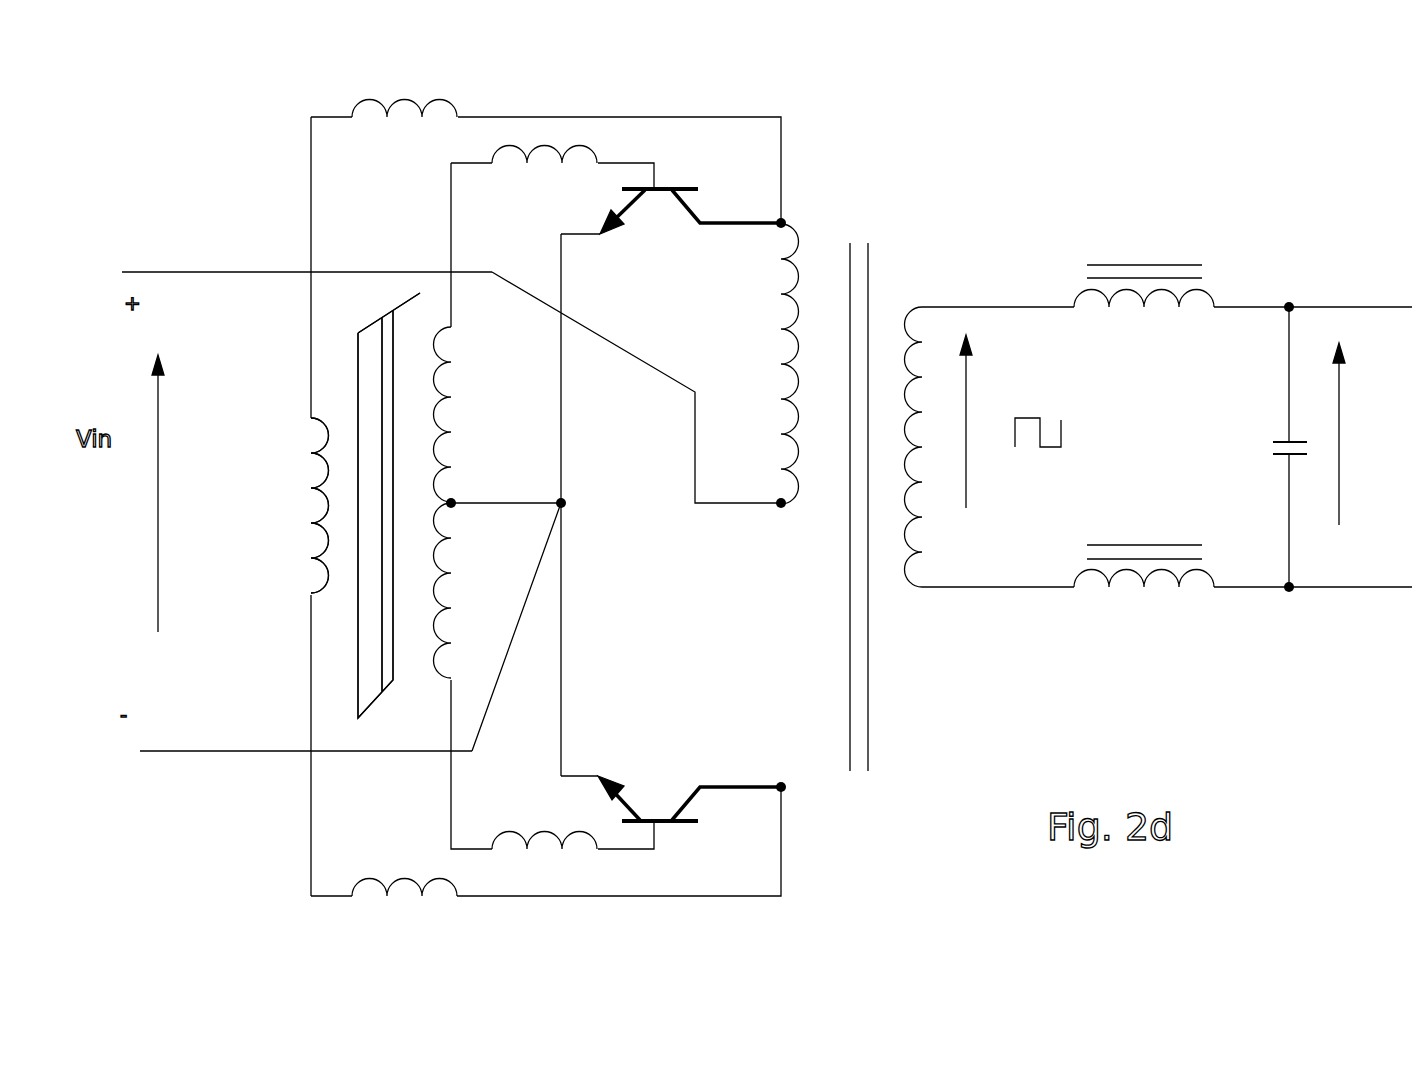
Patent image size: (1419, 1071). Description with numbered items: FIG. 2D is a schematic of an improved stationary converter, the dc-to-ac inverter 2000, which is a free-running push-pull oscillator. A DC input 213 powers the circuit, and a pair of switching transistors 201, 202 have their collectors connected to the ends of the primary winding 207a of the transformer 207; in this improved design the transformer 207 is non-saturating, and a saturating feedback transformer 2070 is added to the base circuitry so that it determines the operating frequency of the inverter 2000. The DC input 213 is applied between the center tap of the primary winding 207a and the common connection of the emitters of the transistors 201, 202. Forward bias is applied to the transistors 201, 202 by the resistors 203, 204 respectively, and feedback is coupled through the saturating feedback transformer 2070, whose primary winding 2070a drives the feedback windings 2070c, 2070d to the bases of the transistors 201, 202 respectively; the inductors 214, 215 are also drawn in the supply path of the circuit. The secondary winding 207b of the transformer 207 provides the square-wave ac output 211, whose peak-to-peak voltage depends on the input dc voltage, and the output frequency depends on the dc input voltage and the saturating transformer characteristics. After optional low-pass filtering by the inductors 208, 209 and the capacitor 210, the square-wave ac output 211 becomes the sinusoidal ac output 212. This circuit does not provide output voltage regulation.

The inverter 2000 is at (985, 97).
The switching transistor 201 is at (687, 179).
The switching transistor 202 is at (625, 781).
The resistor 203 is at (618, 148).
The resistor 204 is at (548, 848).
The transformer 207 is at (878, 713).
The primary winding 207a is at (796, 228).
The secondary winding 207b is at (902, 325).
The saturating feedback transformer 2070 is at (463, 326).
The primary winding 2070a is at (291, 545).
The transformer winding 2070c is at (452, 413).
The transformer winding 2070d is at (447, 597).
The inductor 208 is at (1107, 265).
The inductor 209 is at (1175, 526).
The capacitor 210 is at (1275, 440).
The square-wave ac output 211 is at (975, 375).
The sinusoidal ac output 212 is at (1353, 395).
The DC input 213 is at (207, 437).
The lower choke inductor 214 is at (345, 880).
The upper choke inductor 215 is at (313, 112).